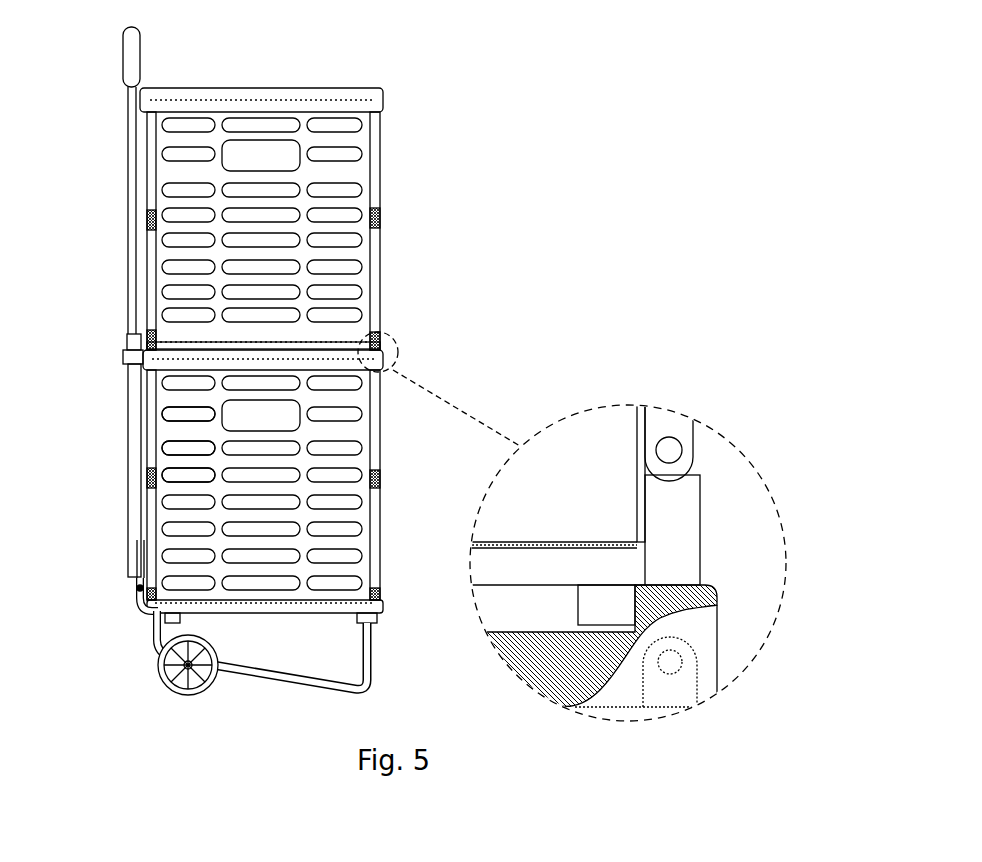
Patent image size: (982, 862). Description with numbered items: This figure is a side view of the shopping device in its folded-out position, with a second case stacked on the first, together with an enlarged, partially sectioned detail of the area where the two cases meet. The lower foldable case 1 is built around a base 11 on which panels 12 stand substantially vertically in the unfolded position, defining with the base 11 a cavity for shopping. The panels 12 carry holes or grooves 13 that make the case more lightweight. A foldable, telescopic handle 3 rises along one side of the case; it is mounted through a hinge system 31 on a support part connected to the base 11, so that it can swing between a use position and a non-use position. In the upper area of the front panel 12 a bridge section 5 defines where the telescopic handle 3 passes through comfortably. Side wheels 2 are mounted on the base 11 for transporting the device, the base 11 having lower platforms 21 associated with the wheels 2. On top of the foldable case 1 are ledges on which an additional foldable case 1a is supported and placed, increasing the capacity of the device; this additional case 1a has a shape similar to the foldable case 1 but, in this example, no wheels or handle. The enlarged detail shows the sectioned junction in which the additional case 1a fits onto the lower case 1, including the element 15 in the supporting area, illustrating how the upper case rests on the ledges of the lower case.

The foldable case 1 is at (382, 497).
The additional foldable case 1a is at (381, 255).
The side wheels 2 is at (159, 669).
The telescopic handle 3 is at (128, 410).
The bridge section 5 is at (125, 357).
The base 11 is at (254, 613).
The panels 12 is at (316, 176).
The holes or grooves 13 is at (170, 415).
The groove 15 is at (527, 683).
The lower platforms 21 is at (372, 673).
The hinge system 31 is at (138, 587).